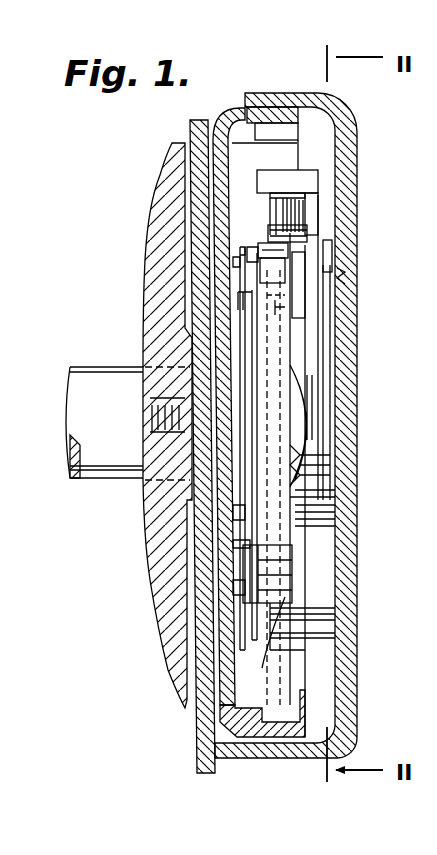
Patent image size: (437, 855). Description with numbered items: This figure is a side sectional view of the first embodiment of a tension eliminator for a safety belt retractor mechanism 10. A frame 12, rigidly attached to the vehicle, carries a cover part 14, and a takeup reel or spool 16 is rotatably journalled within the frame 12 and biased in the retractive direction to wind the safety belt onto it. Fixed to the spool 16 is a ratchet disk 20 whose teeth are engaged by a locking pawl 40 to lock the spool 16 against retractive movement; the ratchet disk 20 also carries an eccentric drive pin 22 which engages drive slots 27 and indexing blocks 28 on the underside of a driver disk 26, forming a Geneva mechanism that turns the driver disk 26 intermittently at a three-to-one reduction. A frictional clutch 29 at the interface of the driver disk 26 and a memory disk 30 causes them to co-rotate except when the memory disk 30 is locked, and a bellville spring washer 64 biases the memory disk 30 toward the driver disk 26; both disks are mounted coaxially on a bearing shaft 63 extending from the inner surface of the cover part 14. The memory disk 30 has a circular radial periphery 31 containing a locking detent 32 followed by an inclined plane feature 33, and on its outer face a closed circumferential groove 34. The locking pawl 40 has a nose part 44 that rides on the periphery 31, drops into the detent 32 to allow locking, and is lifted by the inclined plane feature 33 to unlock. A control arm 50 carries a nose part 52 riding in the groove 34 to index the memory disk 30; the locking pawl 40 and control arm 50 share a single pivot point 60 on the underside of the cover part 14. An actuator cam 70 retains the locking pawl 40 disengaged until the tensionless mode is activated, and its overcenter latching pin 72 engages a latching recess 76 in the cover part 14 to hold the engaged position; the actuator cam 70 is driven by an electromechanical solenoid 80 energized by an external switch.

The safety belt retractor mechanism 10 is at (113, 194).
The frame 12 is at (197, 750).
The cover part 14 is at (362, 711).
The takeup reel or spool 16 is at (86, 378).
The ratchet disk 20 is at (278, 130).
The drive pin 22 is at (198, 378).
The driver disk 26 is at (292, 587).
The drive slots 27 is at (240, 302).
The indexing blocks 28 is at (235, 264).
The frictional clutch 29 is at (250, 542).
The memory disk 30 is at (243, 564).
The circular radial periphery 31 is at (265, 645).
The locking detent 32 is at (268, 250).
The inclined plane feature 33 is at (270, 282).
The circumferential groove 34 is at (300, 530).
The locking pawl 40 is at (305, 175).
The nose part 44 is at (268, 237).
The control arm 50 is at (300, 308).
The nose part 52 is at (280, 328).
The pivot point 60 is at (327, 200).
The bearing shaft 63 is at (333, 478).
The bellville spring washer 64 is at (308, 437).
The actuator cam 70 is at (330, 377).
The overcenter latching pin 72 is at (355, 267).
The over-center latching recess 76 is at (346, 272).
The electromechanical solenoid 80 is at (327, 623).